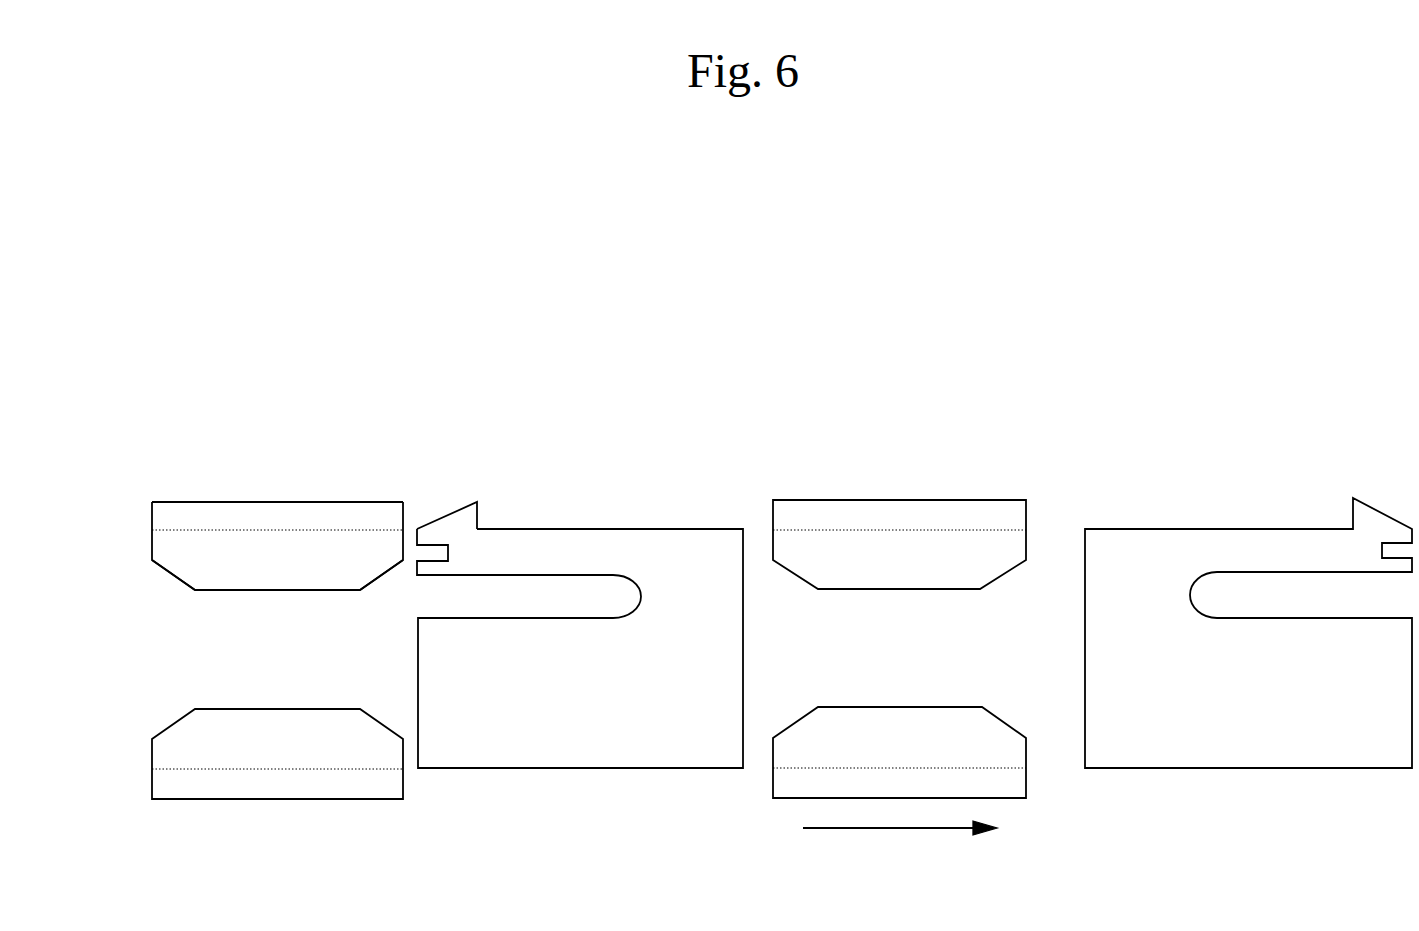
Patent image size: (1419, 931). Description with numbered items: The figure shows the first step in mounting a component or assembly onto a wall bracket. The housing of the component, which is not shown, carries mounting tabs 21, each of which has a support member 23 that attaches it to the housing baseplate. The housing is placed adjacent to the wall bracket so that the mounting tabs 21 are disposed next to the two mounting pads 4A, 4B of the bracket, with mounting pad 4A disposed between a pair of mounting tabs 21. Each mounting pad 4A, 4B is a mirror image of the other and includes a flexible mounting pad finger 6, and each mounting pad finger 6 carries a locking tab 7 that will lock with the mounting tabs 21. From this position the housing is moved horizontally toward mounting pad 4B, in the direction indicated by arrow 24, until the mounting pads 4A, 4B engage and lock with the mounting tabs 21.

The mounting pad finger 6 is at (225, 590).
The mounting tab 21 is at (268, 502).
The support member 23 is at (152, 515).
The locking tab 7 is at (477, 513).
The mounting pad 4A is at (612, 768).
The mounting pad 4B is at (1175, 768).
The arrow 24 is at (908, 828).